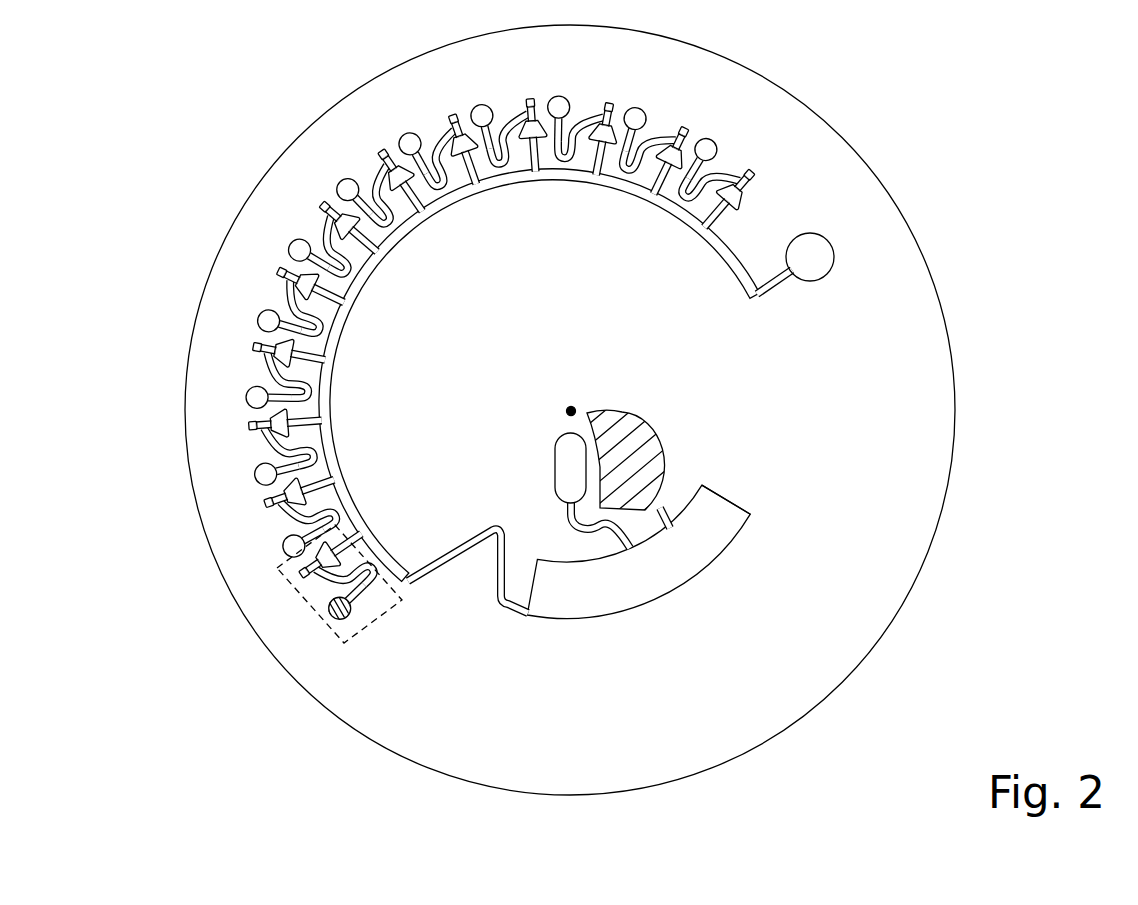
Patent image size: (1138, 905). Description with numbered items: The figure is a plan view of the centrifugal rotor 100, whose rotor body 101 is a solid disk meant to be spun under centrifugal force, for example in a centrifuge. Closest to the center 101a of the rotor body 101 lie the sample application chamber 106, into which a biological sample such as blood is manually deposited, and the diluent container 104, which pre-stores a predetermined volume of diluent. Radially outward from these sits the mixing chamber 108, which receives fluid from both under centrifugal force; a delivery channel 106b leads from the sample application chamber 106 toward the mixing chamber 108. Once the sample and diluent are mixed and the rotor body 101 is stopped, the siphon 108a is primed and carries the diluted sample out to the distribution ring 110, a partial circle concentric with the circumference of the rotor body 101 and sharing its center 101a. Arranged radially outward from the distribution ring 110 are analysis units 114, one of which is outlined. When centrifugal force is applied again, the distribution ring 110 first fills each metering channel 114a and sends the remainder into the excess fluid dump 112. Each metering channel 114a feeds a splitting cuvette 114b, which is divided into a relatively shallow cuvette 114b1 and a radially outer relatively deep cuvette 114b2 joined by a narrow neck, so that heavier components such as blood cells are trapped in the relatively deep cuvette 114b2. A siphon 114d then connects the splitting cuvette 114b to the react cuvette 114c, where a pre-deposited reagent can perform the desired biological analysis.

The centrifugal rotor 100 is at (1073, 62).
The rotor body 101 is at (928, 350).
The center 101a is at (571, 406).
The diluent container 104 is at (677, 490).
The sample application chamber 106 is at (570, 467).
The channel 106b is at (567, 518).
The mixing chamber 108 is at (637, 588).
The siphon 108a is at (490, 578).
The distribution ring 110 is at (327, 387).
The excess fluid dump 112 is at (812, 253).
The analysis unit 114 is at (232, 564).
The metering channel 114a is at (345, 541).
The splitting cuvette 114b is at (657, 427).
The relatively shallow cuvette 114b1 is at (325, 558).
The relatively deep cuvette 114b2 is at (330, 565).
The react cuvette 114c is at (329, 623).
The siphon 114d is at (352, 590).